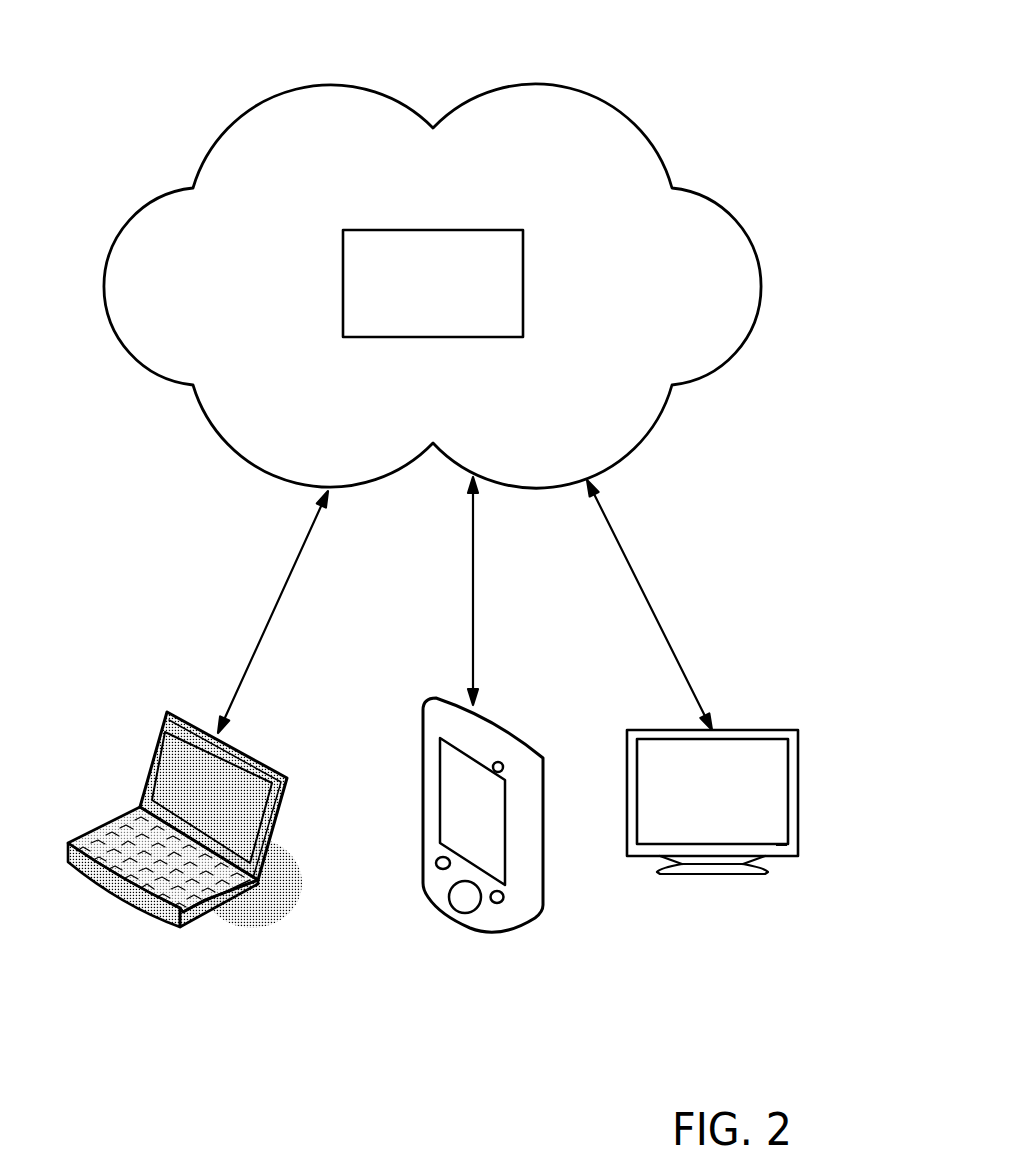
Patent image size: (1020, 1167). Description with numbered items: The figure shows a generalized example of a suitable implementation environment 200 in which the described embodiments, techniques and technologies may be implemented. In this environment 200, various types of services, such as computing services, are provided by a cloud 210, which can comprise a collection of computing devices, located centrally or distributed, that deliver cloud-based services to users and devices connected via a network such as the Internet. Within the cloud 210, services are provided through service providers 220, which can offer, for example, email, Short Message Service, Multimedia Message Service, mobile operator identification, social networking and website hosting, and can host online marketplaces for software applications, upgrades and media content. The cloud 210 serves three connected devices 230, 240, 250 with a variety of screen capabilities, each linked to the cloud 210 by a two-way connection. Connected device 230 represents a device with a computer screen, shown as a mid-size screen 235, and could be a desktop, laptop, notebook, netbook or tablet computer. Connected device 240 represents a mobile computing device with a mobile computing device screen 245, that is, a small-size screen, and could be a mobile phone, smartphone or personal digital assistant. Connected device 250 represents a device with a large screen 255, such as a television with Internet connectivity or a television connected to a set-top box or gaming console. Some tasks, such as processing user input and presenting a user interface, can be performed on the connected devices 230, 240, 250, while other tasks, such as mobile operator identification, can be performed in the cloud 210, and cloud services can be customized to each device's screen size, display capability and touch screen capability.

The implementation environment 200 is at (743, 76).
The cloud 210 is at (418, 198).
The service providers 220 is at (418, 320).
The connected device 230 is at (183, 820).
The mid-size screen 235 is at (192, 802).
The connected device 240 is at (482, 787).
The mobile computing device screen 245 is at (460, 826).
The connected device 250 is at (712, 775).
The large screen 255 is at (697, 802).